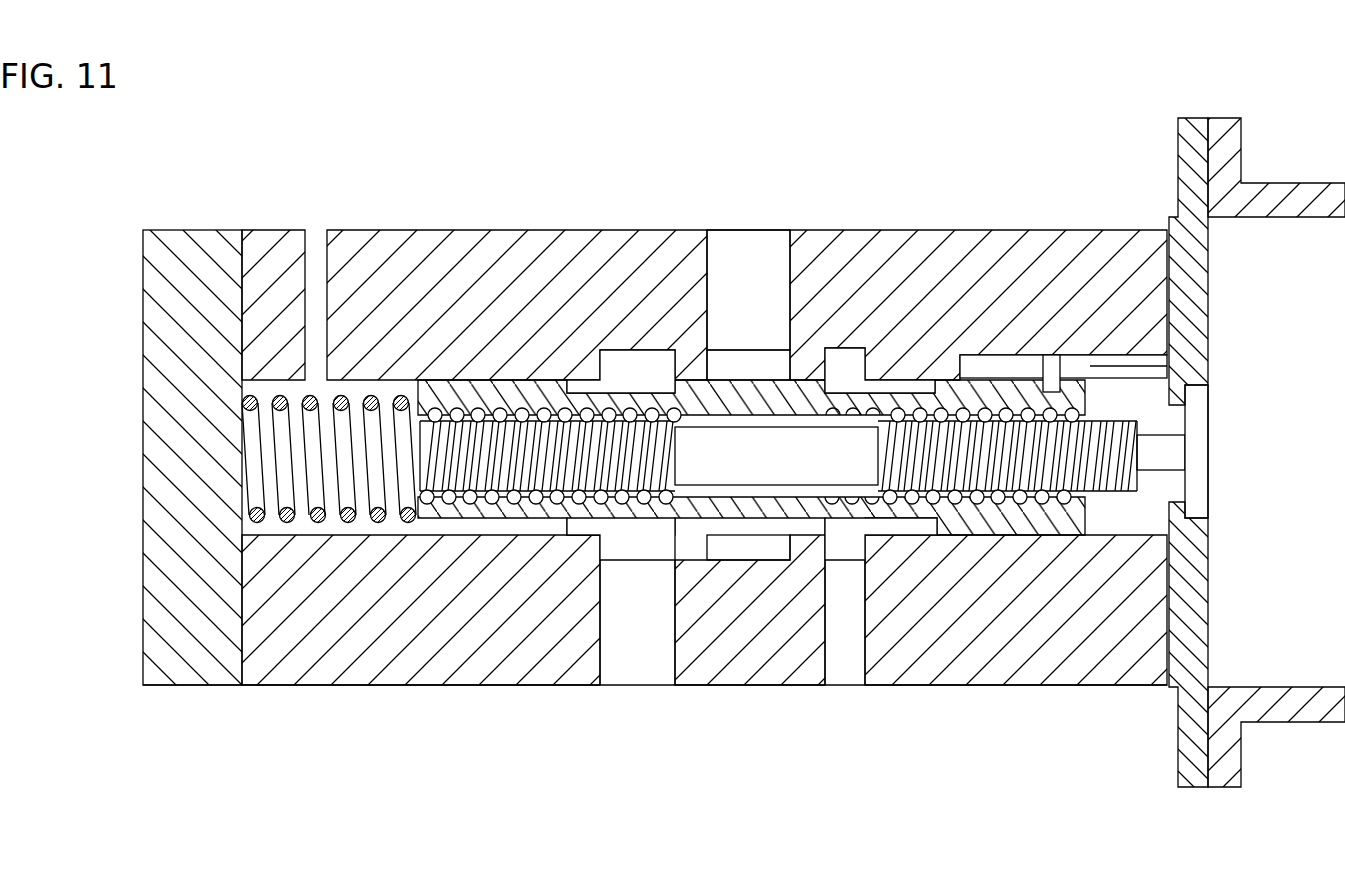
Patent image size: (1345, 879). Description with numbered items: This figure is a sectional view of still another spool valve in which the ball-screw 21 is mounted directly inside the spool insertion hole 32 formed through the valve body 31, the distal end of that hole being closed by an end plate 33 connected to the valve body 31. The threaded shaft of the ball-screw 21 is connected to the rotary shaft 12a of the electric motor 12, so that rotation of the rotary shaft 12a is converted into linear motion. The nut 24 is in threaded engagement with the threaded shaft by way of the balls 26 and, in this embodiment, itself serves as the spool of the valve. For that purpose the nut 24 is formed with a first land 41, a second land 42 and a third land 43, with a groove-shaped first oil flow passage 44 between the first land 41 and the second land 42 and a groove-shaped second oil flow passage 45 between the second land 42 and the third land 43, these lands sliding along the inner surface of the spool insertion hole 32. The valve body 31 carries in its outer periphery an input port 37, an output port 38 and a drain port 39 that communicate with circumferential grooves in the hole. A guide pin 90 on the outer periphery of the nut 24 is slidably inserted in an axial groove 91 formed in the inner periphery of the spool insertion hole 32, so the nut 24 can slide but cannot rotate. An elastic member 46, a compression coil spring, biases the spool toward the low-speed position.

The electric motor 12 is at (1300, 245).
The rotary shaft 12a is at (1174, 457).
The ball-screw 21 is at (977, 362).
The nut 24 is at (695, 387).
The balls 26 is at (946, 402).
The valve body 31 is at (283, 226).
The spool insertion hole 32 is at (380, 392).
The end plate 33 is at (172, 246).
The input port 37 is at (847, 672).
The output port 38 is at (753, 258).
The drain port 39 is at (616, 655).
The first land 41 is at (1020, 536).
The second land 42 is at (760, 536).
The third land 43 is at (495, 537).
The first oil flow passage 44 is at (937, 519).
The second oil flow passage 45 is at (675, 519).
The elastic member 46 is at (258, 453).
The guide pin 90 is at (1052, 355).
The axial groove 91 is at (1108, 364).